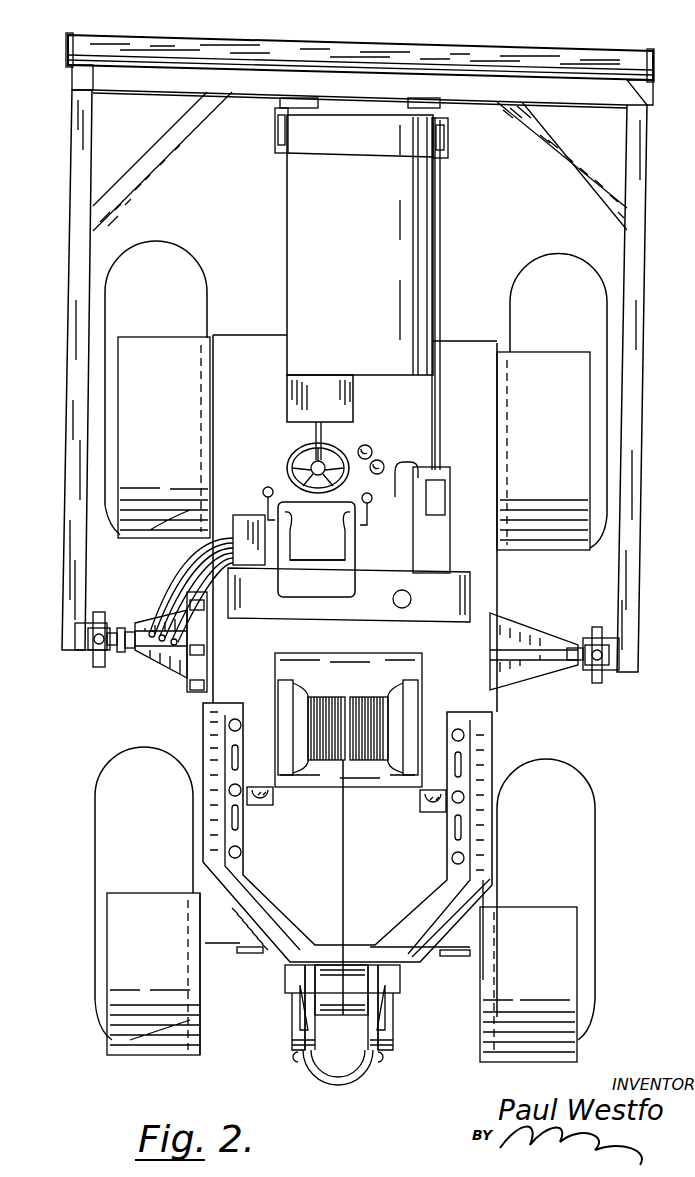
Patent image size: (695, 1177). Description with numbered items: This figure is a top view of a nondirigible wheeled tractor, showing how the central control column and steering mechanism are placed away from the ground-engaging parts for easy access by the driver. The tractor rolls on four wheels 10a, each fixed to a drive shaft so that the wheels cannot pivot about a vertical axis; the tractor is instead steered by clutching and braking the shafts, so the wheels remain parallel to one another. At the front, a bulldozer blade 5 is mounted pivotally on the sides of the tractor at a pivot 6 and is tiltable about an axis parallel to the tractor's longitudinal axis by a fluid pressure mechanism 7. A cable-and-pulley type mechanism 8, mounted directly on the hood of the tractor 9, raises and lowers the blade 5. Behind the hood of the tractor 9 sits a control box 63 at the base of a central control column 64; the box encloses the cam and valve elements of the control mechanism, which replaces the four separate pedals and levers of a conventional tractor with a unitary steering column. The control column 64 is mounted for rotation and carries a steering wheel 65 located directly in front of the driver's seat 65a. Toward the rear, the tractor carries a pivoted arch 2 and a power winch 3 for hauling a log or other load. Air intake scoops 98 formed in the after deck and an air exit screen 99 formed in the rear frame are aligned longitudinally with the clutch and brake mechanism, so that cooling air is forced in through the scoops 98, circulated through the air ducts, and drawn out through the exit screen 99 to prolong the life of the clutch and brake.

The pivoted arch 2 is at (270, 929).
The power winch 3 is at (328, 702).
The bulldozer blade 5 is at (338, 52).
The pivot 6 is at (77, 677).
The fluid pressure mechanism 7 is at (165, 642).
The cable-and-pulley type mechanism 8 is at (248, 153).
The hood of the tractor 9 is at (320, 241).
The wheels 10a is at (98, 795).
The control box 63 is at (290, 404).
The central control column 64 is at (312, 433).
The steering wheel 65 is at (338, 448).
The driver's seat 65a is at (330, 543).
The air intake scoops 98 is at (274, 797).
The air exit screen 99 is at (248, 953).